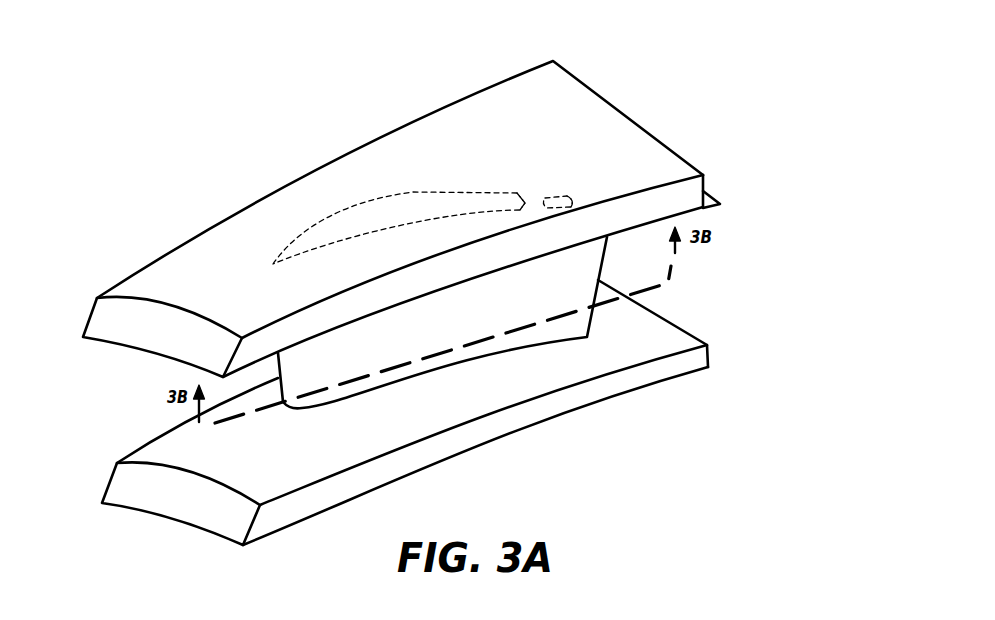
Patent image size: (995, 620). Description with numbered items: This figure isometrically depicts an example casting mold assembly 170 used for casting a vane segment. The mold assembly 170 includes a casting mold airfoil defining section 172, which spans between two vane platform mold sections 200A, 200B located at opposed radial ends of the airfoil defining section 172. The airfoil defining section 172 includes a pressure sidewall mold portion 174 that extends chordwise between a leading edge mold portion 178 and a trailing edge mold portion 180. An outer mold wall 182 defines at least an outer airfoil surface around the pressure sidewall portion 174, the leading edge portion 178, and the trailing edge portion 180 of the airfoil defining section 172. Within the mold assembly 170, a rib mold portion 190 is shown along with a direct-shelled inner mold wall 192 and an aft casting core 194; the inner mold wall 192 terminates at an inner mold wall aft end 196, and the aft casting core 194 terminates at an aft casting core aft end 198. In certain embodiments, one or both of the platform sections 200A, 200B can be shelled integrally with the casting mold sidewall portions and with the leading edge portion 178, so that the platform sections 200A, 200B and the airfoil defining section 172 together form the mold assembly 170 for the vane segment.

The mold assembly 170 is at (696, 98).
The mold assembly airfoil defining section 172 is at (506, 341).
The pressure sidewall mold portion 174 is at (343, 391).
The leading edge mold portion 178 is at (293, 417).
The trailing edge mold portion 180 is at (660, 304).
The outer mold wall 182 is at (233, 290).
The rib mold portion 190 is at (533, 195).
The direct-shelled inner mold wall 192 is at (489, 187).
The aft casting core 194 is at (554, 197).
The inner mold wall aft end 196 is at (516, 192).
The aft casting core aft end 198 is at (572, 203).
The vane platform mold section 200A is at (141, 235).
The vane platform mold section 200B is at (132, 534).